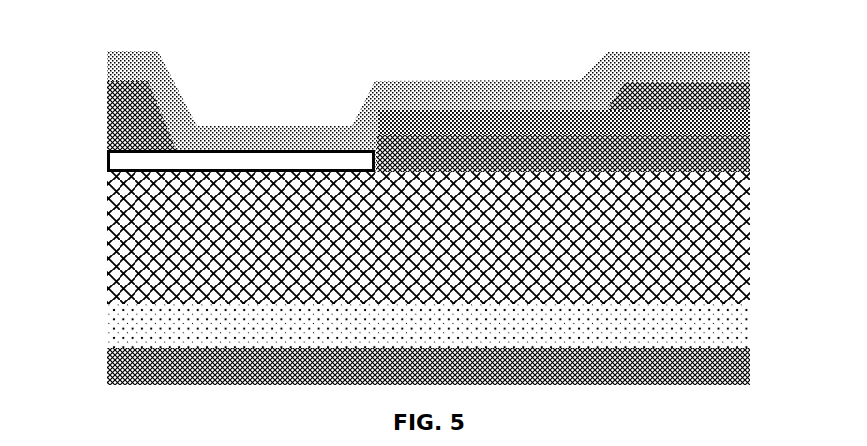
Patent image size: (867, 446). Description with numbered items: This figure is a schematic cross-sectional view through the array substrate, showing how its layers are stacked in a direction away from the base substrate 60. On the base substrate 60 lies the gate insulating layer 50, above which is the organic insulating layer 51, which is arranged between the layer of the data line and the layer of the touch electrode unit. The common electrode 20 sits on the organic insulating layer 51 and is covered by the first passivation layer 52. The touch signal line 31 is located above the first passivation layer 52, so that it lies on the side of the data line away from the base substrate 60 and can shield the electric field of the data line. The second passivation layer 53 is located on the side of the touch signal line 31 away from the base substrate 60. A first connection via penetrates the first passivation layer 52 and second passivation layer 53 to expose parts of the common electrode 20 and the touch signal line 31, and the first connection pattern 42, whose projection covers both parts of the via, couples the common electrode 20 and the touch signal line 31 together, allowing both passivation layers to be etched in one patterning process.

The common electrode 20 is at (108, 157).
The touch signal line 31 is at (750, 117).
The first connection pattern 42 is at (658, 68).
The gate insulating layer 50 is at (737, 328).
The organic insulating layer 51 is at (750, 213).
The first passivation layer 52 is at (750, 145).
The second passivation layer 53 is at (750, 92).
The base substrate 60 is at (750, 377).